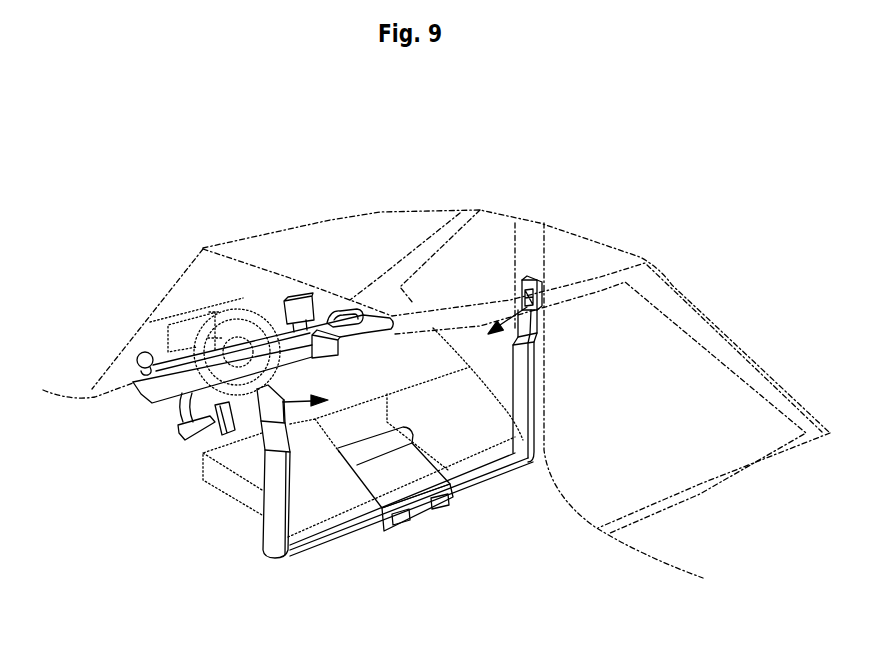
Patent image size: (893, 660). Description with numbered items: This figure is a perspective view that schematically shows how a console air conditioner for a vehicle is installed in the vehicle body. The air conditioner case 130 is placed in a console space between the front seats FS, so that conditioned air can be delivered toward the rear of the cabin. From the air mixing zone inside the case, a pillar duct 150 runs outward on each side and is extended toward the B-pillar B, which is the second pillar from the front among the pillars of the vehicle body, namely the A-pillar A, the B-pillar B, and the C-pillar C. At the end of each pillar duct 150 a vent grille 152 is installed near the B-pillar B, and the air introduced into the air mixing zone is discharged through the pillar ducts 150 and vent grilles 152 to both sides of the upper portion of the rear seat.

The air conditioner case 130 is at (412, 490).
The pillar duct 150 is at (313, 546).
The vent grille 152 is at (540, 308).
The A-pillar A is at (460, 218).
The B-pillar B is at (531, 226).
The C-pillar C is at (667, 290).
The front seats FS is at (235, 473).